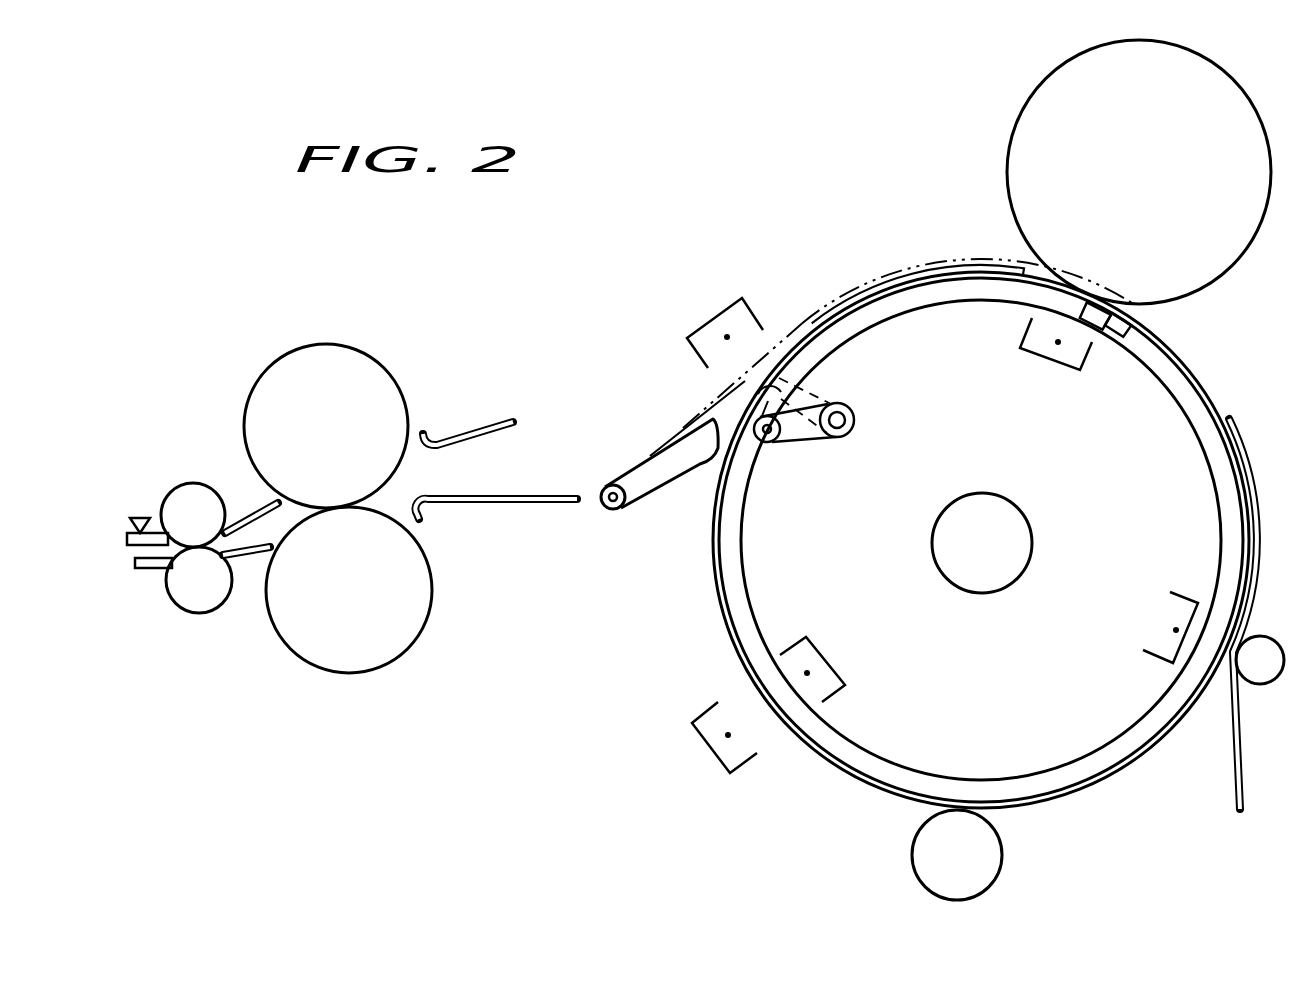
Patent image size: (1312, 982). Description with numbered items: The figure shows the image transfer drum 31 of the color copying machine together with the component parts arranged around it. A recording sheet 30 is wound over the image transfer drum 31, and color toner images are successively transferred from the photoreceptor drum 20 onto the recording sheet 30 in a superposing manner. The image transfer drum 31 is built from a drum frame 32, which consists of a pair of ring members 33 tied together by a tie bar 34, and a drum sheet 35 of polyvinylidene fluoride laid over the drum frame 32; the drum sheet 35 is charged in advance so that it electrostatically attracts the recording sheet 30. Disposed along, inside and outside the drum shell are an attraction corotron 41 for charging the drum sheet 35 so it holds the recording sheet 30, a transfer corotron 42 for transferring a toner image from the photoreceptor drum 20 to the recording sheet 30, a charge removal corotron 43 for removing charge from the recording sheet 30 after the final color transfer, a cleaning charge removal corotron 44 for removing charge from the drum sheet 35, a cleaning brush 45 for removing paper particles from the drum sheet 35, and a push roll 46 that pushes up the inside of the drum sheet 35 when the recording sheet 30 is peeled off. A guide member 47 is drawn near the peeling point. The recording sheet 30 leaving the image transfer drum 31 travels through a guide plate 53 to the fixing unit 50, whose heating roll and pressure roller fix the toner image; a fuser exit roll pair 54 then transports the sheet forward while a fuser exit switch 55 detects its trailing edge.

The photoreceptor drum 20 is at (1151, 170).
The recording sheet 30 is at (1262, 614).
The image transfer drum 31 is at (981, 553).
The drum frame 32 is at (981, 540).
The ring members 33 is at (935, 292).
The tie bar 34 is at (1106, 361).
The drum sheet 35 is at (1248, 448).
The attraction corotron 41 is at (1160, 610).
The transfer corotron 42 is at (1049, 368).
The charge removal corotron 43 is at (725, 310).
The cleaning charge removal corotron 44 is at (836, 700).
The cleaning brush 45 is at (990, 855).
The push roll 46 is at (804, 445).
The guide 47 is at (659, 491).
The fixing unit 50 is at (341, 475).
The guide plate 53 is at (496, 497).
The fuser exit roll pair 54 is at (202, 583).
The fuser exit switch 55 is at (145, 489).